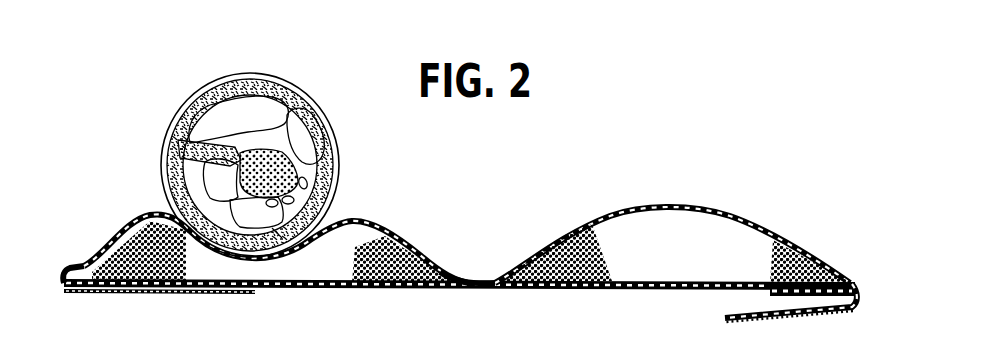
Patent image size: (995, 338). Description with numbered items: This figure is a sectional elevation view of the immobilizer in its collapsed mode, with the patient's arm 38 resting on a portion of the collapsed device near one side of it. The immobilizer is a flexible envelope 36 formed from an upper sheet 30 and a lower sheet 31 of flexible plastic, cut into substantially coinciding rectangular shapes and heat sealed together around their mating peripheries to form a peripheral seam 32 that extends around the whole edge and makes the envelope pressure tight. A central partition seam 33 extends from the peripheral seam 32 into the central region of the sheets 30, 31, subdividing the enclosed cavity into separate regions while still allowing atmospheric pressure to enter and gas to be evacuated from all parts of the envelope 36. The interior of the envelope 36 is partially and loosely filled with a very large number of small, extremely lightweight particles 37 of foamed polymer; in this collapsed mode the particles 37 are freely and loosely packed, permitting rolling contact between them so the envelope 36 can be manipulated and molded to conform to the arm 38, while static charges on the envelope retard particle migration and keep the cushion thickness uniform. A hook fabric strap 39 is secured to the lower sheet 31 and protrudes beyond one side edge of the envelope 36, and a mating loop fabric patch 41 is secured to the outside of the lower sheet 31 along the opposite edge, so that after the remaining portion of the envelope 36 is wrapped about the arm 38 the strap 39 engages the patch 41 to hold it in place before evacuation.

The upper sheet 30 is at (383, 233).
The lower sheet 31 is at (332, 288).
The peripheral seam 32 is at (80, 263).
The central partition seam 33 is at (460, 279).
The envelope 36 is at (144, 206).
The particles 37 is at (717, 246).
The patient's arm 38 is at (178, 108).
The Velcro hook fabric strap 39 is at (740, 313).
The Velcro fabric patch 41 is at (107, 288).